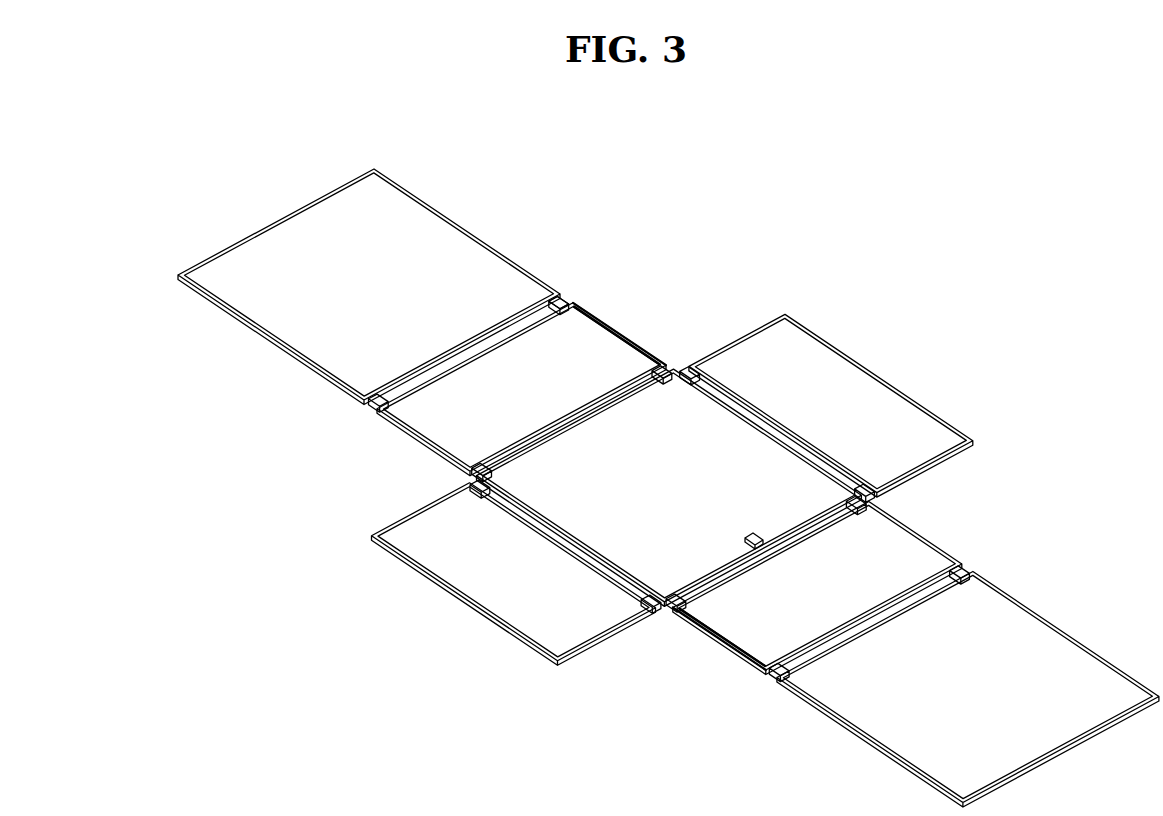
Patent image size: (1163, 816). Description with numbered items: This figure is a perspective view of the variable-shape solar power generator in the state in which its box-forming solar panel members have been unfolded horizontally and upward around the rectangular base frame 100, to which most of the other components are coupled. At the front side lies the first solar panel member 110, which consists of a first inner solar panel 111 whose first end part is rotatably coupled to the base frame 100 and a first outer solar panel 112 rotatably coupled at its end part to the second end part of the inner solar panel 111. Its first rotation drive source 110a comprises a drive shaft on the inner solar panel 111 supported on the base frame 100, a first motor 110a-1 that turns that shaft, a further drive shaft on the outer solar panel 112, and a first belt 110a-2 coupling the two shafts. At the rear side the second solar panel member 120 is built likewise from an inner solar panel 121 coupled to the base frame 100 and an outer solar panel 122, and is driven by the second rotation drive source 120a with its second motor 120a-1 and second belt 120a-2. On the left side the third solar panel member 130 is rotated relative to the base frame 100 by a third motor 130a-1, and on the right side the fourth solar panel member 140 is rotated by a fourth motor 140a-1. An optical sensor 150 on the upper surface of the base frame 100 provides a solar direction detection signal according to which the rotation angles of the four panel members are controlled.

The base frame 100 is at (627, 508).
The first solar panel member for forming a box 110 is at (485, 318).
The 1-1 solar panel for forming a box 111 is at (438, 422).
The 1-2 solar panel for forming a box 112 is at (295, 322).
The first rotation drive source 110a is at (671, 271).
The first motor 110a-1 is at (660, 367).
The first belt 110a-2 is at (572, 297).
The second solar panel member for forming a box 120 is at (853, 652).
The 2-1 solar panel for forming a box 121 is at (910, 553).
The 2-2 solar panel for forming a box 122 is at (1028, 648).
The second rotation drive source 120a is at (668, 705).
The second motor 120a-1 is at (683, 613).
The second belt 120a-2 is at (735, 655).
The third solar panel member for forming a box 130 is at (482, 575).
The third motor 130a-1 is at (467, 480).
The fourth solar panel member for forming a box 140 is at (860, 393).
The fourth motor 140a-1 is at (853, 490).
The optical sensor 150 is at (753, 535).